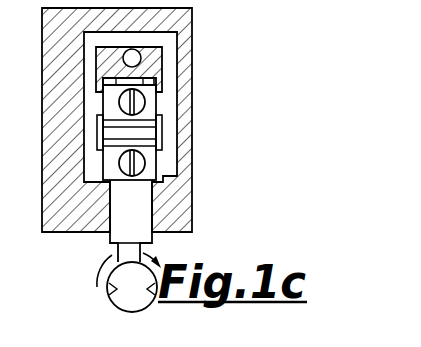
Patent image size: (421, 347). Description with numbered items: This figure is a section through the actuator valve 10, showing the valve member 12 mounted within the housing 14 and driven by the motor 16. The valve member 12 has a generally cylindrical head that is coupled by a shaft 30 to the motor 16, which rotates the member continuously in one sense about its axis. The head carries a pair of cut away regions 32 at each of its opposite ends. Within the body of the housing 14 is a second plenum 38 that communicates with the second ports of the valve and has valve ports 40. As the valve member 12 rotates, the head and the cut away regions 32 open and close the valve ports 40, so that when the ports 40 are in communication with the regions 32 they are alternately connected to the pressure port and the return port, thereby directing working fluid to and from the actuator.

The valve 10 is at (140, 160).
The valve member 12 is at (160, 141).
The housing 14 is at (57, 152).
The motor 16 is at (112, 300).
The shaft 30 is at (123, 223).
The cut away regions 32 is at (152, 104).
The second plenum 38 is at (172, 45).
The valve ports 40 is at (163, 110).